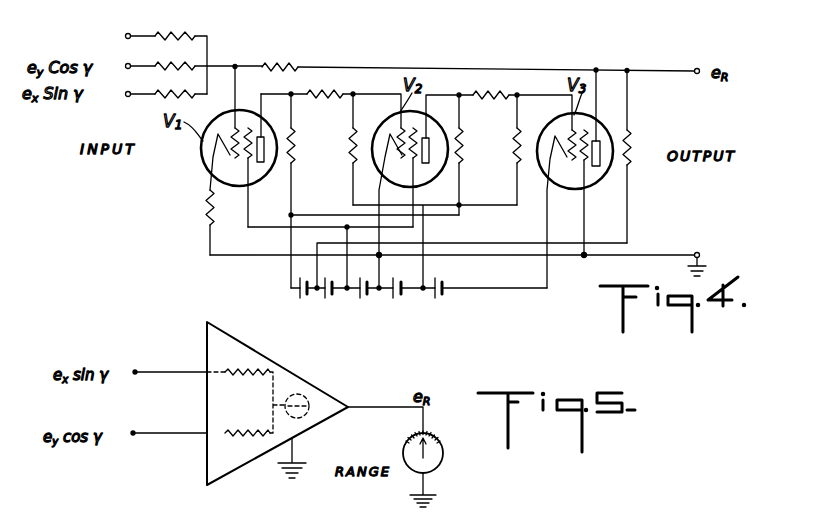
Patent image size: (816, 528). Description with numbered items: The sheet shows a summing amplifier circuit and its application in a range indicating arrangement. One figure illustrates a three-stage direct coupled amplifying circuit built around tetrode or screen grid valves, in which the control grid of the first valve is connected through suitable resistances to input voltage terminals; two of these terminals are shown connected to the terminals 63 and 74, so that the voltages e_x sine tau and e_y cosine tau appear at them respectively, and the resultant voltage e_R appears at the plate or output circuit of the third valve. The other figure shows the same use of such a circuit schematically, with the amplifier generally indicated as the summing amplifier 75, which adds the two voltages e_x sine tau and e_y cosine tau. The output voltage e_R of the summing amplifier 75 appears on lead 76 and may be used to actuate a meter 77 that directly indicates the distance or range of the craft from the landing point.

In FIG. 4, the input terminal 63 is at (127, 96).
In FIG. 5, the input terminal 63 is at (136, 370).
In FIG. 4, the input terminal 74 is at (126, 64).
In FIG. 5, the input terminal 74 is at (133, 435).
In FIG. 5, the summing amplifier 75 is at (279, 363).
In FIG. 5, the lead 76 is at (377, 407).
In FIG. 5, the meter 77 is at (444, 455).